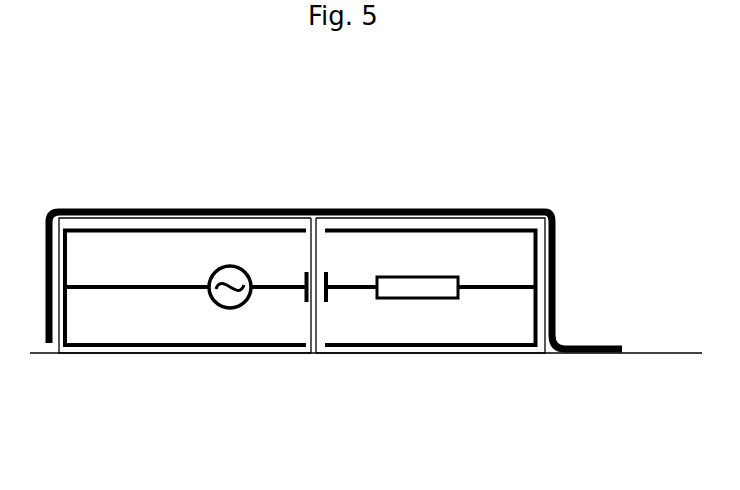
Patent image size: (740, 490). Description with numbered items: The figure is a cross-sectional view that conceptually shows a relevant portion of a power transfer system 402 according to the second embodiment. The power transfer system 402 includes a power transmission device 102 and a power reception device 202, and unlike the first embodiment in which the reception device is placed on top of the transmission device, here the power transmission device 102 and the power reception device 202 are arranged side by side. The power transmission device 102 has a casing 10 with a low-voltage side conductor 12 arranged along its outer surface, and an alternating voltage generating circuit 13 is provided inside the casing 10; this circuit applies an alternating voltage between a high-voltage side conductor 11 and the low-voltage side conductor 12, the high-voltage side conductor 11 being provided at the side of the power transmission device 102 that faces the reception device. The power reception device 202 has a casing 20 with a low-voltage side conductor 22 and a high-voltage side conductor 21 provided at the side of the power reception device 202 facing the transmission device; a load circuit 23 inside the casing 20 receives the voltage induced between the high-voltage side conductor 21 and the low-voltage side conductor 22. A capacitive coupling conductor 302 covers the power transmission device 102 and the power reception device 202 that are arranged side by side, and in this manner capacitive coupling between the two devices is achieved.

The power transfer system 402 is at (429, 123).
The power transmission device 102 is at (167, 368).
The power reception device 202 is at (415, 368).
The casing 10 is at (107, 219).
The low-voltage side conductor 12 is at (185, 231).
The alternating voltage generating circuit 13 is at (208, 272).
The high-voltage side conductor 11 is at (305, 275).
The capacitive coupling conductor 302 is at (313, 220).
The casing 20 is at (513, 219).
The low-voltage side conductor 22 is at (412, 228).
The high-voltage side conductor 21 is at (327, 274).
The load circuit 23 is at (423, 277).